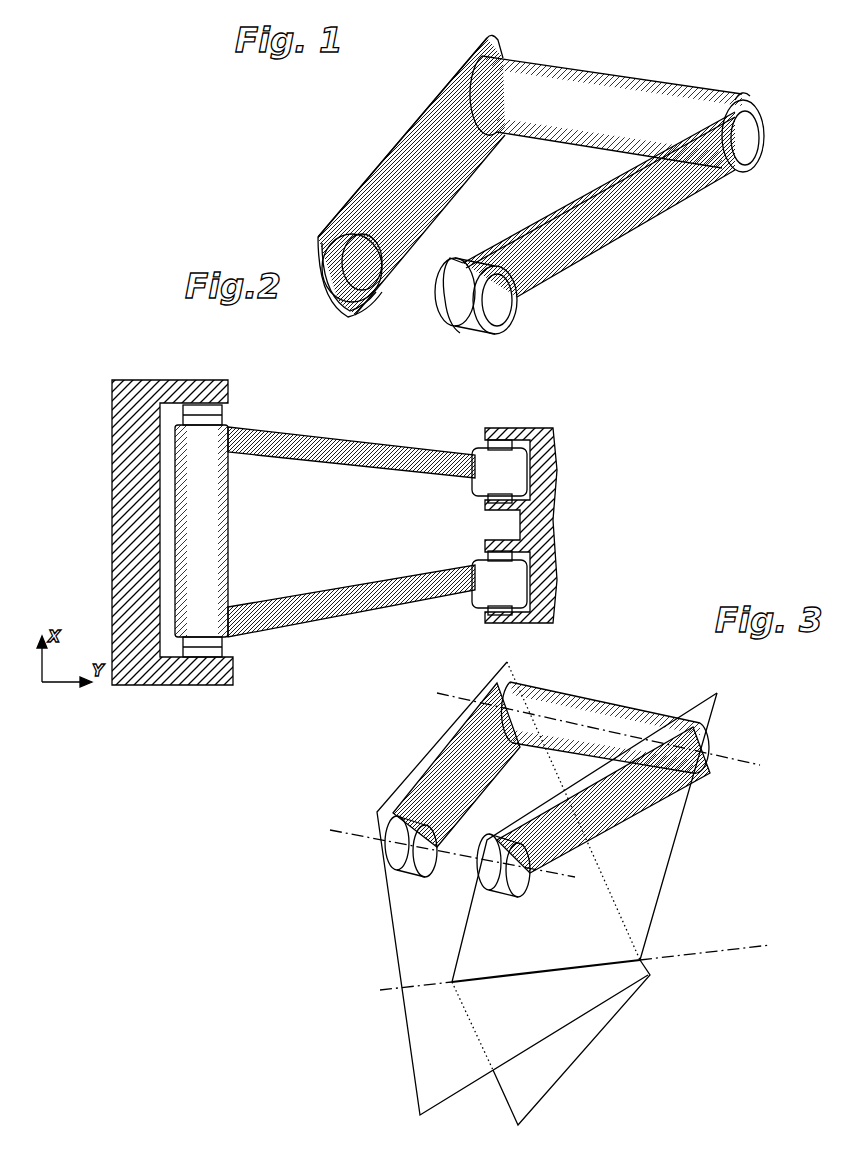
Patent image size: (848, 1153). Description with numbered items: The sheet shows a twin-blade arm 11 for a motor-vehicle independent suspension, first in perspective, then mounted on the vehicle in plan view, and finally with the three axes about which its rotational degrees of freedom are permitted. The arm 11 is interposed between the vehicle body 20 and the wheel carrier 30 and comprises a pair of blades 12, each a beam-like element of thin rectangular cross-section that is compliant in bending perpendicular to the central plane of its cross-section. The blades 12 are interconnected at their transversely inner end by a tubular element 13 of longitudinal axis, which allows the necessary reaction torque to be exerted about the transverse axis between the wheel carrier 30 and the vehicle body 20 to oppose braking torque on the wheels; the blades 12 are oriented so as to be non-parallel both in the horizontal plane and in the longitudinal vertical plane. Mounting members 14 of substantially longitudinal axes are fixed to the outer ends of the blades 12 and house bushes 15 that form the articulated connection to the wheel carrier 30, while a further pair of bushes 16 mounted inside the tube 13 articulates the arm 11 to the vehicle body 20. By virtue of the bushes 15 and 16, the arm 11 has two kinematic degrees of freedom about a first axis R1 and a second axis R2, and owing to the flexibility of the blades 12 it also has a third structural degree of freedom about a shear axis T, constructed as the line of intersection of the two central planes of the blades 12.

In FIG. 1, the arm 11 is at (387, 139).
In FIG. 2, the arm 11 is at (309, 422).
In FIG. 3, the arm 11 is at (628, 697).
In FIG. 1, the blades 12 is at (364, 212).
In FIG. 2, the blades 12 is at (381, 441).
In FIG. 3, the blades 12 is at (423, 804).
In FIG. 1, the tubular element 13 is at (608, 116).
In FIG. 2, the tubular element 13 is at (213, 558).
In FIG. 3, the tubular element 13 is at (568, 712).
In FIG. 1, the mounting members 14 is at (370, 290).
In FIG. 2, the mounting members 14 is at (487, 484).
In FIG. 3, the mounting members 14 is at (457, 856).
In FIG. 2, the bushes 15 is at (507, 440).
In FIG. 2, the bushes 16 is at (200, 405).
In FIG. 2, the vehicle body 20 is at (130, 530).
In FIG. 2, the wheel carrier 30 is at (551, 510).
In FIG. 3, the first axis R1 is at (322, 832).
In FIG. 3, the second axis R2 is at (735, 752).
In FIG. 3, the third axis T is at (680, 958).